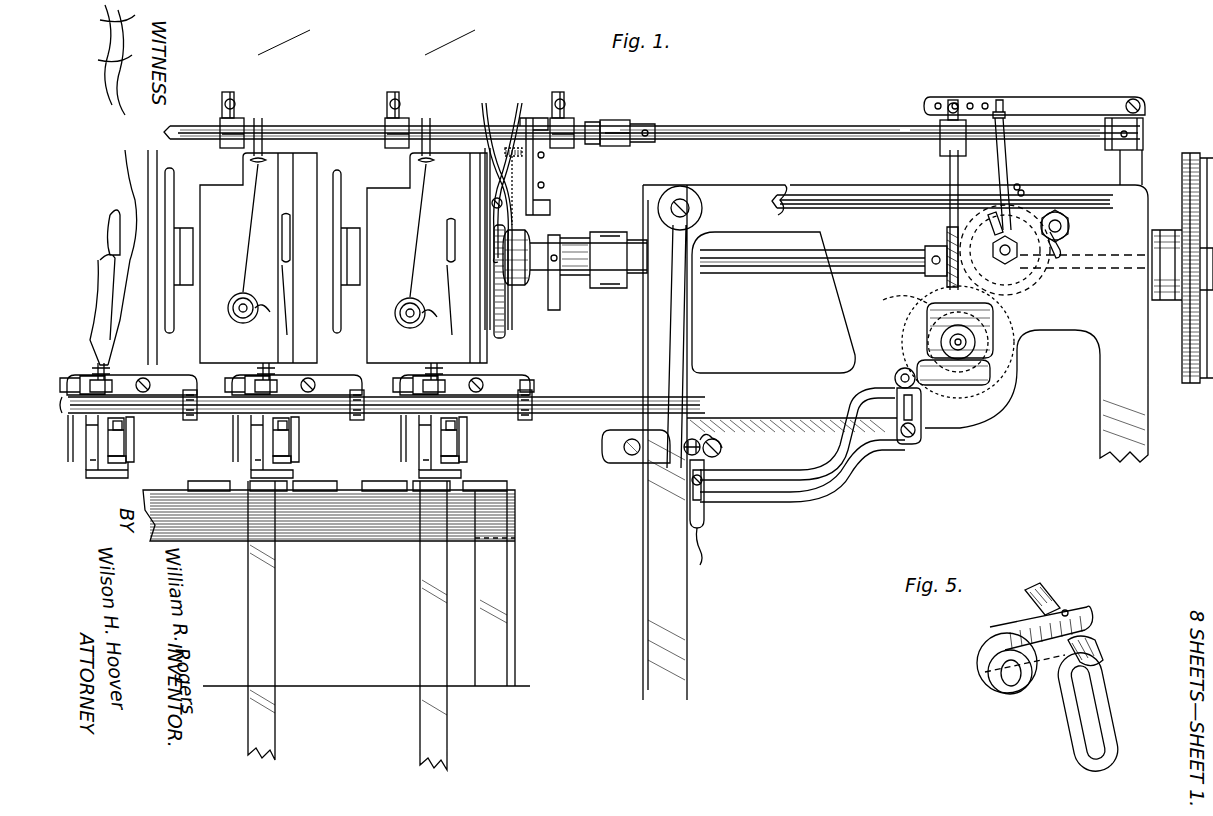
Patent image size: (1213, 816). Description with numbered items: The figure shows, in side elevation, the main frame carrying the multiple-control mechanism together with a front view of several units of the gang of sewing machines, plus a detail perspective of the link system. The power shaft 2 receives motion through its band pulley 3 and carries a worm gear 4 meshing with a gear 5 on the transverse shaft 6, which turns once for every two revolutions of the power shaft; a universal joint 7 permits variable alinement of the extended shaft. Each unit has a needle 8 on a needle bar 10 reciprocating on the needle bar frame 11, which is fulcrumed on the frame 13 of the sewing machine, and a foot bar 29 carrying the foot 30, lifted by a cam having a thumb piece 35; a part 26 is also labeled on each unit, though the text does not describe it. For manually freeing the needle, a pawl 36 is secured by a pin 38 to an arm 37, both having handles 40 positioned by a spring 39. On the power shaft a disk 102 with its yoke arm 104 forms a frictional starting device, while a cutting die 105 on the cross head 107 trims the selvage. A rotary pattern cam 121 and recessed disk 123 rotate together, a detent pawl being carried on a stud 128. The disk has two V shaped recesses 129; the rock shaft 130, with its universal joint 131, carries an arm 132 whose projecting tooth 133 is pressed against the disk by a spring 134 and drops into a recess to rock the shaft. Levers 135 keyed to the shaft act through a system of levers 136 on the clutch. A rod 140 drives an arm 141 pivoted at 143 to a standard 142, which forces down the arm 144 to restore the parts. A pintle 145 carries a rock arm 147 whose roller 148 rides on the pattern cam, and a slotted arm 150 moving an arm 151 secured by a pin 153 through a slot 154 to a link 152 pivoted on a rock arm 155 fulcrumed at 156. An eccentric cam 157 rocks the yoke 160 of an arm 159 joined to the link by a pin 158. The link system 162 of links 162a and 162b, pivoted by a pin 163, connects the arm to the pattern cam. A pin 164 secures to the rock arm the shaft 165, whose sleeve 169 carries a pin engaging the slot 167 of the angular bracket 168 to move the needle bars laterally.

In FIG. 1, the power shaft 2 is at (786, 262).
In FIG. 1, the band pulley 3 is at (1183, 176).
In FIG. 1, the worm gear 4 is at (945, 238).
In FIG. 1, the gear 5 is at (895, 325).
In FIG. 1, the transverse shaft 6 is at (965, 338).
In FIG. 1, the universal joint 7 is at (602, 238).
In FIG. 1, the needle 8 is at (122, 440).
In FIG. 1, the needle bar 10 is at (123, 432).
In FIG. 1, the needle bar frame 11 is at (128, 368).
In FIG. 1, the frame of the sewing machine 13 is at (157, 345).
In FIG. 1, the lever 26 is at (108, 220).
In FIG. 1, the foot bar 29 is at (90, 450).
In FIG. 1, the foot 30 is at (98, 477).
In FIG. 1, the thumb piece 35 is at (68, 441).
In FIG. 1, the pawl 36 is at (526, 236).
In FIG. 1, the arm 37 is at (488, 170).
In FIG. 1, the pin 38 is at (492, 201).
In FIG. 1, the spring 39 is at (508, 130).
In FIG. 1, the handles 40 is at (483, 102).
In FIG. 1, the disk 102 is at (175, 182).
In FIG. 1, the yoke arm 104 is at (560, 298).
In FIG. 1, the cutting die 105 is at (124, 458).
In FIG. 1, the cross head 107 is at (180, 440).
In FIG. 1, the rotary pattern cam 121 is at (1084, 263).
In FIG. 1, the recessed disk 123 is at (1025, 210).
In FIG. 1, the stud 128 is at (1070, 224).
In FIG. 1, the V shaped recesses 129 is at (992, 218).
In FIG. 1, the rock shaft 130 is at (794, 136).
In FIG. 1, the universal joint 131 is at (626, 122).
In FIG. 1, the arm 132 is at (1010, 165).
In FIG. 1, the projecting tooth 133 is at (1066, 212).
In FIG. 1, the spring 134 is at (1020, 186).
In FIG. 1, the lever 135 is at (240, 104).
In FIG. 1, the system of levers 136 is at (538, 176).
In FIG. 1, the rod 140 is at (950, 178).
In FIG. 1, the arm 141 is at (1050, 102).
In FIG. 1, the standard 142 is at (1143, 128).
In FIG. 1, the pivot 143 is at (1137, 100).
In FIG. 1, the arm 144 is at (940, 125).
In FIG. 5, the pintle 145 is at (1045, 597).
In FIG. 1, the rock arm 147 is at (1000, 290).
In FIG. 1, the roller 148 is at (945, 270).
In FIG. 1, the slotted arm 150 is at (935, 420).
In FIG. 5, the slotted arm 150 is at (1105, 695).
In FIG. 1, the arm 151 is at (814, 498).
In FIG. 1, the link 152 is at (708, 518).
In FIG. 1, the pin 153 is at (712, 500).
In FIG. 1, the slot 154 is at (715, 552).
In FIG. 1, the rock arm 155 is at (680, 340).
In FIG. 1, the fulcrum 156 is at (686, 204).
In FIG. 1, the eccentric cam 157 is at (985, 352).
In FIG. 1, the pin 158 is at (680, 470).
In FIG. 1, the arm 159 is at (796, 466).
In FIG. 1, the yoke 160 is at (935, 305).
In FIG. 5, the link system 162 is at (975, 654).
In FIG. 5, the link 162a is at (1000, 630).
In FIG. 5, the link 162b is at (1040, 680).
In FIG. 5, the pin 163 is at (1003, 683).
In FIG. 1, the pin 164 is at (722, 450).
In FIG. 1, the shaft 165 is at (600, 430).
In FIG. 1, the slot 167 is at (536, 386).
In FIG. 1, the angular bracket 168 is at (160, 380).
In FIG. 1, the sleeve 169 is at (198, 410).